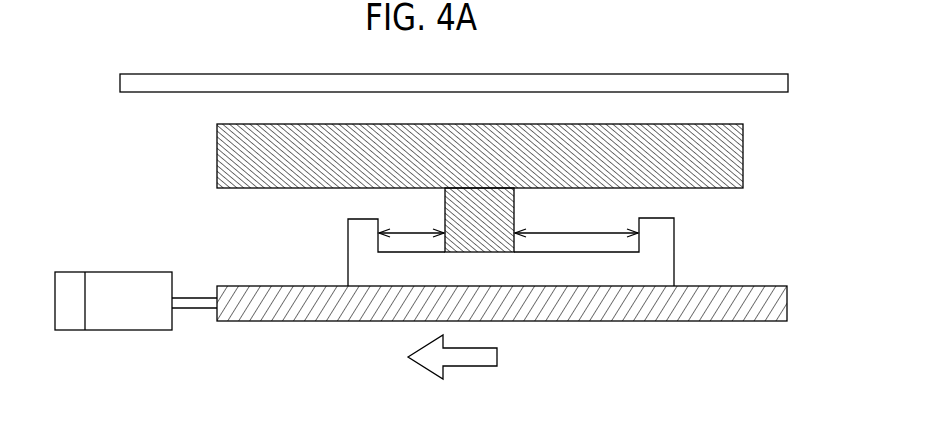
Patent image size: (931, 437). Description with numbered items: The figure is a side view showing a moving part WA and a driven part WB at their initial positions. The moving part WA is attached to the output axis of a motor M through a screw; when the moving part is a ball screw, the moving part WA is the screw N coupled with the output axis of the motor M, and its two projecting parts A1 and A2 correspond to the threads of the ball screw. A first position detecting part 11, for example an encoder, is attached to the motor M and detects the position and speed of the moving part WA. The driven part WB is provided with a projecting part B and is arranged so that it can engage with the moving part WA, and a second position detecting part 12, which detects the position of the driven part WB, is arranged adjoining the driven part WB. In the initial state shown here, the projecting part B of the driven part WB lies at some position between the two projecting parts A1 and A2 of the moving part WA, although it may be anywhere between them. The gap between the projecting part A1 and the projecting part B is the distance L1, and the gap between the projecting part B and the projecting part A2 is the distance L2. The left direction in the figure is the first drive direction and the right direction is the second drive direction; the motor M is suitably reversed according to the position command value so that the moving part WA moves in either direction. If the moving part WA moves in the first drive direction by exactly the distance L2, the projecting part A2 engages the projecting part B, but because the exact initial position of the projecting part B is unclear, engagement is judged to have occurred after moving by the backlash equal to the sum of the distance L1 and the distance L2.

The second position detecting part 12 is at (732, 87).
The driven part WB is at (733, 158).
The projecting part B is at (497, 212).
The moving part WA is at (516, 250).
The projecting part A1 is at (360, 230).
The projecting part A2 is at (665, 230).
The distance L1 is at (411, 220).
The distance L2 is at (576, 220).
The screw N is at (257, 312).
The motor M is at (136, 317).
The first position detecting part 11 is at (70, 322).